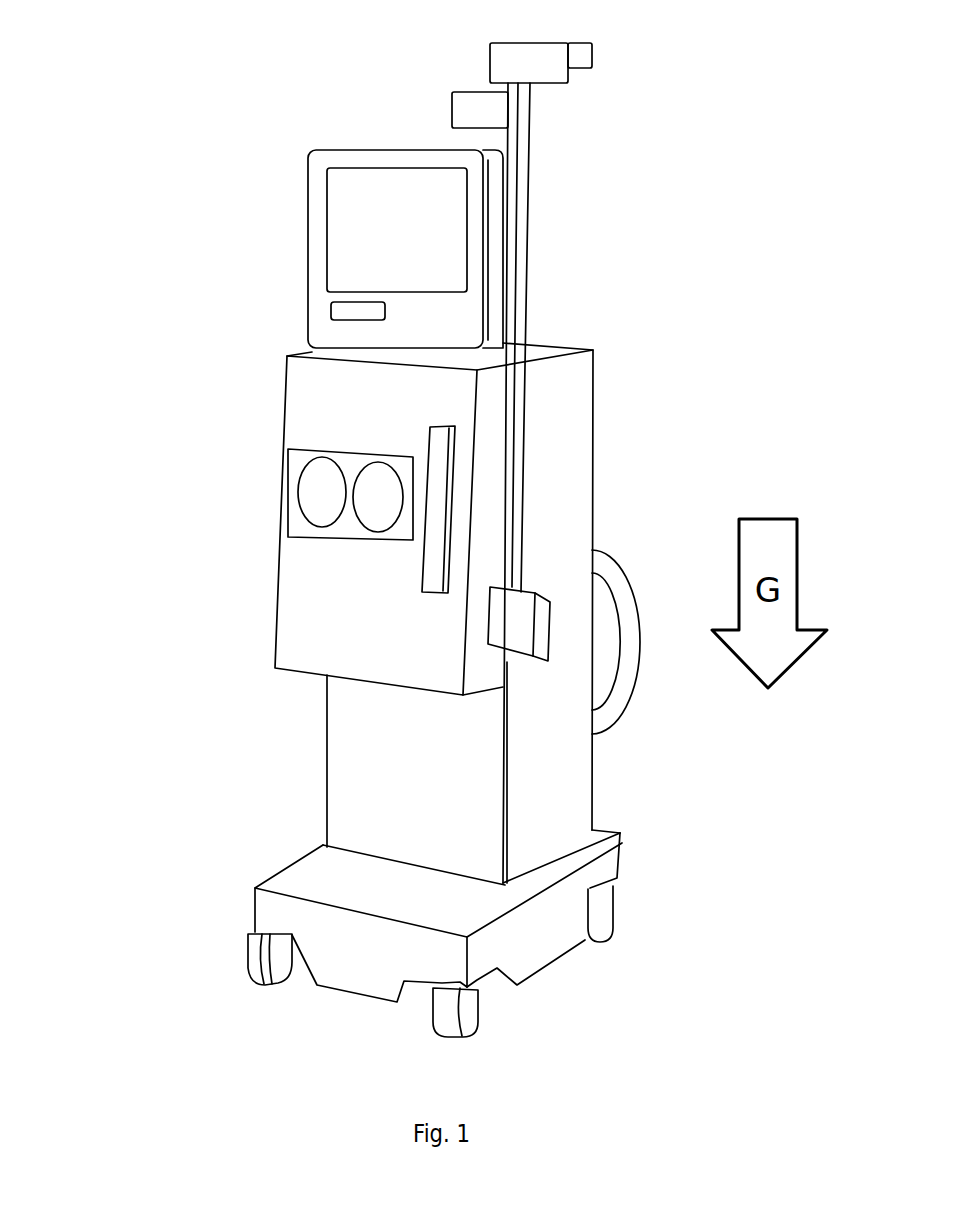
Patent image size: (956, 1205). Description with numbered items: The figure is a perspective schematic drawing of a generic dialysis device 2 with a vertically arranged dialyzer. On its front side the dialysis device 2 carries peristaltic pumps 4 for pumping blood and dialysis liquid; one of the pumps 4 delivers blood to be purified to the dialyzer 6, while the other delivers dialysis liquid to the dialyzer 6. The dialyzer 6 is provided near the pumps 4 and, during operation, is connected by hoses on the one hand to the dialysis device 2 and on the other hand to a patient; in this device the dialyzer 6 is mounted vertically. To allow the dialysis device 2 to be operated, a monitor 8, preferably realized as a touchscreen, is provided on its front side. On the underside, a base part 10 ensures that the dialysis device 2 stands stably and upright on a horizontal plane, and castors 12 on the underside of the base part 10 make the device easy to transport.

The dialysis device 2 is at (249, 83).
The monitor 8 is at (395, 228).
The peristaltic pumps 4 is at (371, 493).
The dialyzer 6 is at (437, 547).
The base part 10 is at (395, 895).
The castors 12 is at (254, 893).